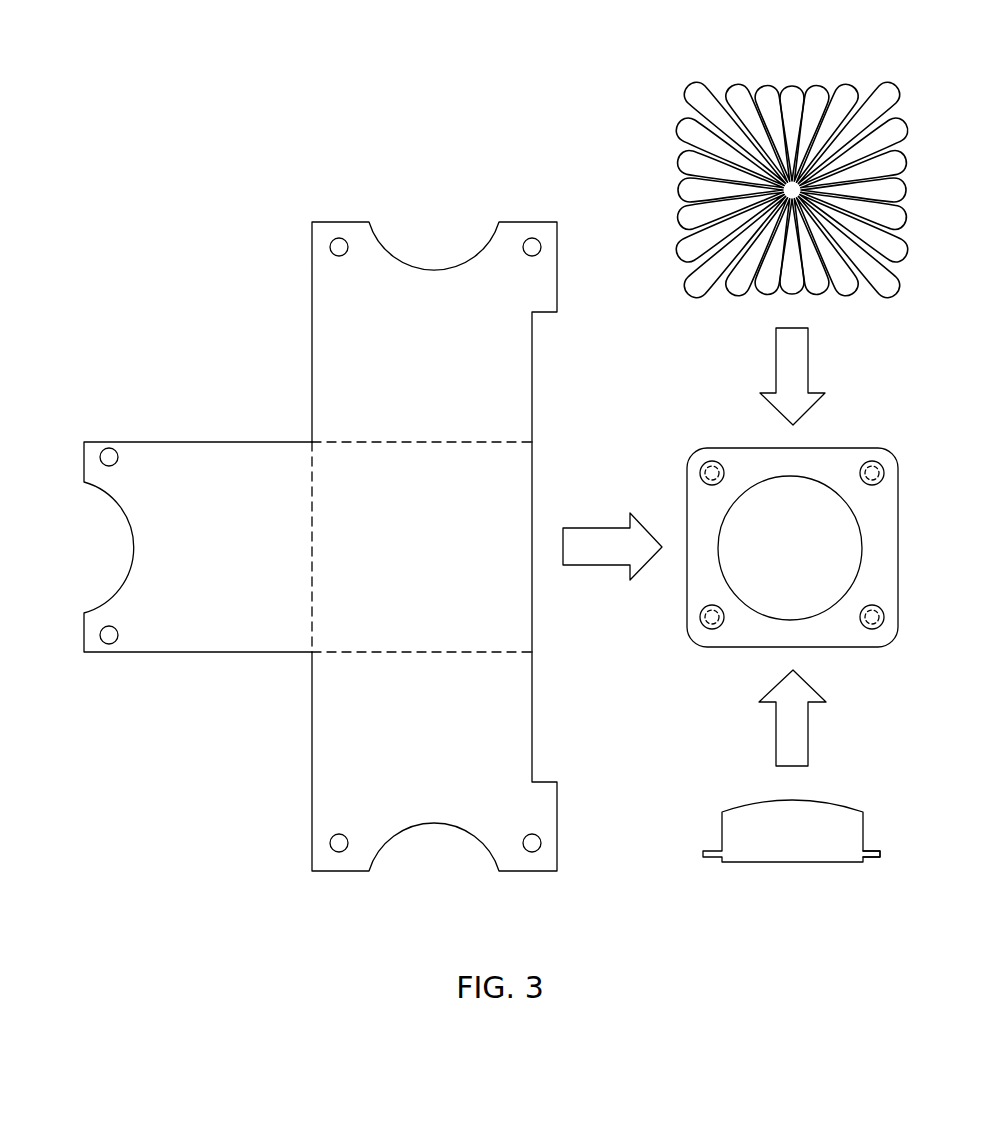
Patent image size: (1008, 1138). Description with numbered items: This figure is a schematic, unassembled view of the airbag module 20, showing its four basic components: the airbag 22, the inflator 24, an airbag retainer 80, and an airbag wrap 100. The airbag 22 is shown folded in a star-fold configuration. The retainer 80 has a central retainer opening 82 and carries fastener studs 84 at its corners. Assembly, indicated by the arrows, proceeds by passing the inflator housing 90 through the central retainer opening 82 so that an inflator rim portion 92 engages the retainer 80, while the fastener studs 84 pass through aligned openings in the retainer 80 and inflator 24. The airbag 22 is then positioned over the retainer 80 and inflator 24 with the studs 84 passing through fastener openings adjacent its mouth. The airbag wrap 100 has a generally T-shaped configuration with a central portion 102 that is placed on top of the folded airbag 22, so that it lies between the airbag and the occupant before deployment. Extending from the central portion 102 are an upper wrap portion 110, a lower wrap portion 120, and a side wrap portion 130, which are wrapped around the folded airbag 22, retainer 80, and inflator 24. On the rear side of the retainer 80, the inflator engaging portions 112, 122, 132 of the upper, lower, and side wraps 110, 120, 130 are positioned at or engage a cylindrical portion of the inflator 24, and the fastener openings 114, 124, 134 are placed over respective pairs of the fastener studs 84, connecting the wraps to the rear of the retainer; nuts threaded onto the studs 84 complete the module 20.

The airbag module 20 is at (178, 216).
The airbag 22 is at (661, 68).
The inflator 24 is at (778, 784).
The airbag retainer 80 is at (668, 430).
The central retainer opening 82 is at (745, 538).
The fastener studs 84 is at (711, 461).
The inflator housing 90 is at (810, 830).
The inflator rim portion 92 is at (868, 853).
The airbag wrap 100 is at (220, 306).
The central portion 102 is at (490, 515).
The upper wrap portion 110 is at (340, 352).
The inflator engaging portion 112 is at (442, 268).
The fastener openings 114 is at (339, 238).
The lower wrap portion 120 is at (345, 750).
The inflator engaging portion 122 is at (436, 822).
The fastener openings 124 is at (339, 852).
The side wrap portion 130 is at (200, 470).
The inflator engaging portion 132 is at (133, 547).
The fastener openings 134 is at (100, 457).